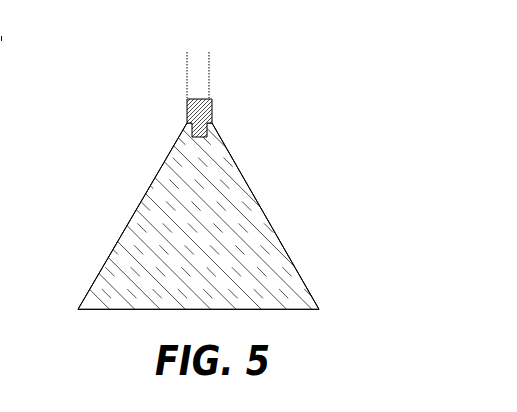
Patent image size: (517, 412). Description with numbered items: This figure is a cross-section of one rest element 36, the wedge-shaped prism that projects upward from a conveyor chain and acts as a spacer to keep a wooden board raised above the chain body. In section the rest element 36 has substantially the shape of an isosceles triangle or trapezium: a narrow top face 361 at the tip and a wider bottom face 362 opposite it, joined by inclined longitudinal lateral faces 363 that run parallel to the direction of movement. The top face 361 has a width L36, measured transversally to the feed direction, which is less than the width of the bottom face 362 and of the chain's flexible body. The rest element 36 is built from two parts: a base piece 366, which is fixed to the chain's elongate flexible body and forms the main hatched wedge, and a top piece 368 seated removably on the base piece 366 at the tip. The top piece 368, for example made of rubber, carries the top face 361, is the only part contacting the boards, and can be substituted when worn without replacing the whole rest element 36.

The rest element 36 is at (252, 202).
The top face 361 is at (209, 99).
The bottom face 362 is at (266, 310).
The longitudinal lateral face 363 is at (134, 219).
The base piece 366 is at (114, 236).
The top piece 368 is at (197, 91).
The width of the top face L36 is at (207, 52).